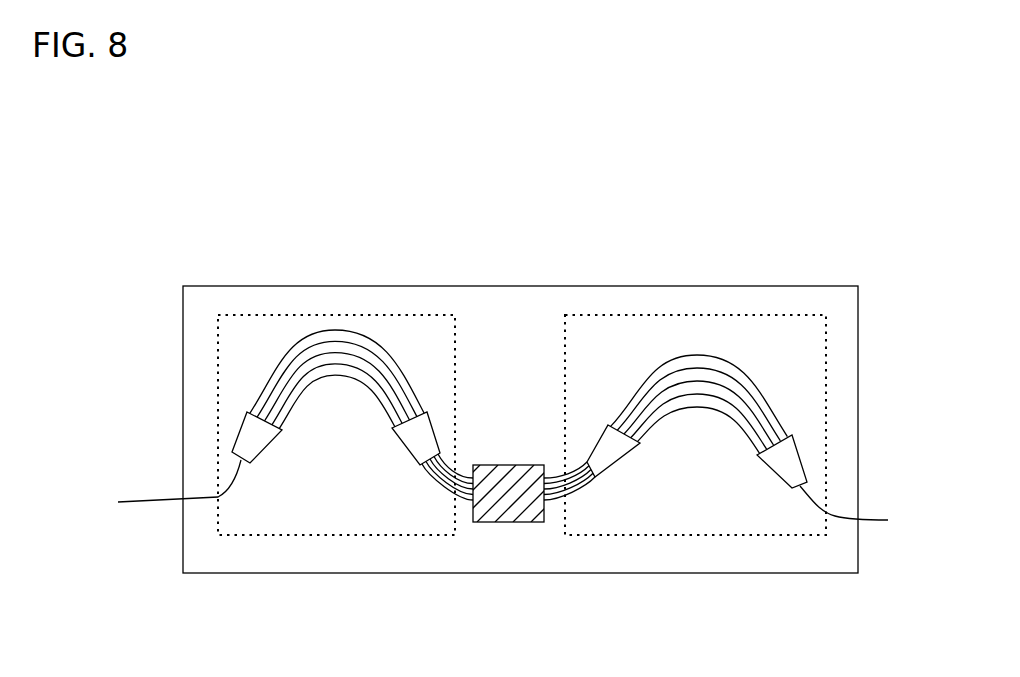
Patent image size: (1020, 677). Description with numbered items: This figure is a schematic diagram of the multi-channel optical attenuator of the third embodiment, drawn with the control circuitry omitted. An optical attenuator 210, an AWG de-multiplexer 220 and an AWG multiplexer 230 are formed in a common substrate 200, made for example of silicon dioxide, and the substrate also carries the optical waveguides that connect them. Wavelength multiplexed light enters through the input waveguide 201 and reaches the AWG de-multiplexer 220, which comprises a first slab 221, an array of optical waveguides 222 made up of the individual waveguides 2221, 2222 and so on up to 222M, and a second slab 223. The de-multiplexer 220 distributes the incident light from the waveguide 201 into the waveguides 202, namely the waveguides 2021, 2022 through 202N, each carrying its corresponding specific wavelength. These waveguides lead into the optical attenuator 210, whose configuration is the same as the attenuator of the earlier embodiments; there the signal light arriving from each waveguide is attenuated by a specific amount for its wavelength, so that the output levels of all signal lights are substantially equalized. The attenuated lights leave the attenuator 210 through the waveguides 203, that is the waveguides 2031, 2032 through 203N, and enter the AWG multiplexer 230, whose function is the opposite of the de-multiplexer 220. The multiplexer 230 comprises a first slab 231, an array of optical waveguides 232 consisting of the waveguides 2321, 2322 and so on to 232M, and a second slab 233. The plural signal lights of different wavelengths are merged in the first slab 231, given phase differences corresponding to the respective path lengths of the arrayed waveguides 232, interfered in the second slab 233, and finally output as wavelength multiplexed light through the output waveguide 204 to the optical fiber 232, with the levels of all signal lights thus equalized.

The substrate 200 is at (497, 285).
The optical waveguide 201 is at (205, 498).
The optical waveguide 204 is at (852, 520).
The optical attenuator 210 is at (517, 522).
The AWG de-multiplexer 220 is at (297, 535).
The AWG multiplexer 230 is at (715, 540).
The first slab 221 is at (233, 440).
The second slab 223 is at (430, 413).
The optical waveguides 222 is at (349, 320).
The optical waveguide 2221 is at (315, 330).
The optical waveguide 2222 is at (340, 330).
The optical waveguide 222M is at (322, 378).
The optical waveguides 202 is at (484, 496).
The optical waveguide 2021 is at (443, 457).
The optical waveguide 2022 is at (452, 473).
The optical waveguide 202N is at (447, 497).
The optical waveguides 203 is at (599, 469).
The optical waveguide 2031 is at (567, 457).
The optical waveguide 2032 is at (580, 465).
The optical waveguide 203N is at (572, 500).
The first slab 231 is at (133, 508).
The second slab 233 is at (772, 479).
The optical fiber 232 is at (878, 528).
The optical waveguide 2321 is at (677, 355).
The optical waveguide 2322 is at (712, 354).
The optical waveguide 232M is at (702, 410).